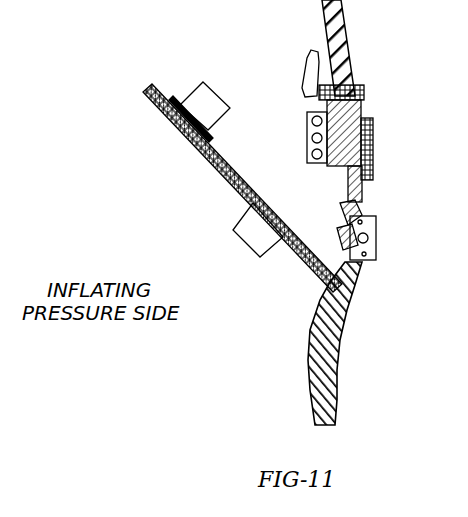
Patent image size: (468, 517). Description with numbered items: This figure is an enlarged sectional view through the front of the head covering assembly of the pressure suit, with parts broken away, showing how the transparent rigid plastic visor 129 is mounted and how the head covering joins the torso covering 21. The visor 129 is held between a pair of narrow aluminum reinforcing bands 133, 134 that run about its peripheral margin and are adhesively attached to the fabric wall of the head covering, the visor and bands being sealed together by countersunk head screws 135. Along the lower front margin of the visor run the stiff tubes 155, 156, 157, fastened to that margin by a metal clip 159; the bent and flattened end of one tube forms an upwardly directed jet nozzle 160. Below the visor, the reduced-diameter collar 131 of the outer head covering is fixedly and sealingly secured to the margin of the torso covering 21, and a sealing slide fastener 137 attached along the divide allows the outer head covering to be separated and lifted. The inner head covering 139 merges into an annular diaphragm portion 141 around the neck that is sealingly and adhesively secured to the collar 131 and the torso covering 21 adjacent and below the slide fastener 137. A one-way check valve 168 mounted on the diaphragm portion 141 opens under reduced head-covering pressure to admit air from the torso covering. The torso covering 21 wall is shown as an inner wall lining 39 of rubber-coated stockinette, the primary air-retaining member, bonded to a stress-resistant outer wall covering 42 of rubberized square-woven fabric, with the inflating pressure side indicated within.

The visor 129 is at (326, 10).
The jet nozzle 160 is at (311, 50).
The countersunk head screw 135 is at (358, 96).
The reinforcing band 133 is at (362, 108).
The reinforcing band 134 is at (374, 133).
The tube 155 is at (308, 113).
The metal clip 159 is at (312, 122).
The tube 156 is at (312, 139).
The tube 157 is at (312, 156).
The sealing slide fastener 137 is at (377, 236).
The collar 131 is at (348, 332).
The torso covering 21 is at (352, 401).
The inner wall lining 39 is at (312, 416).
The outer wall covering 42 is at (338, 424).
The inner head covering 139 is at (232, 190).
The diaphragm portion 141 is at (208, 156).
The check valve 168 is at (197, 94).